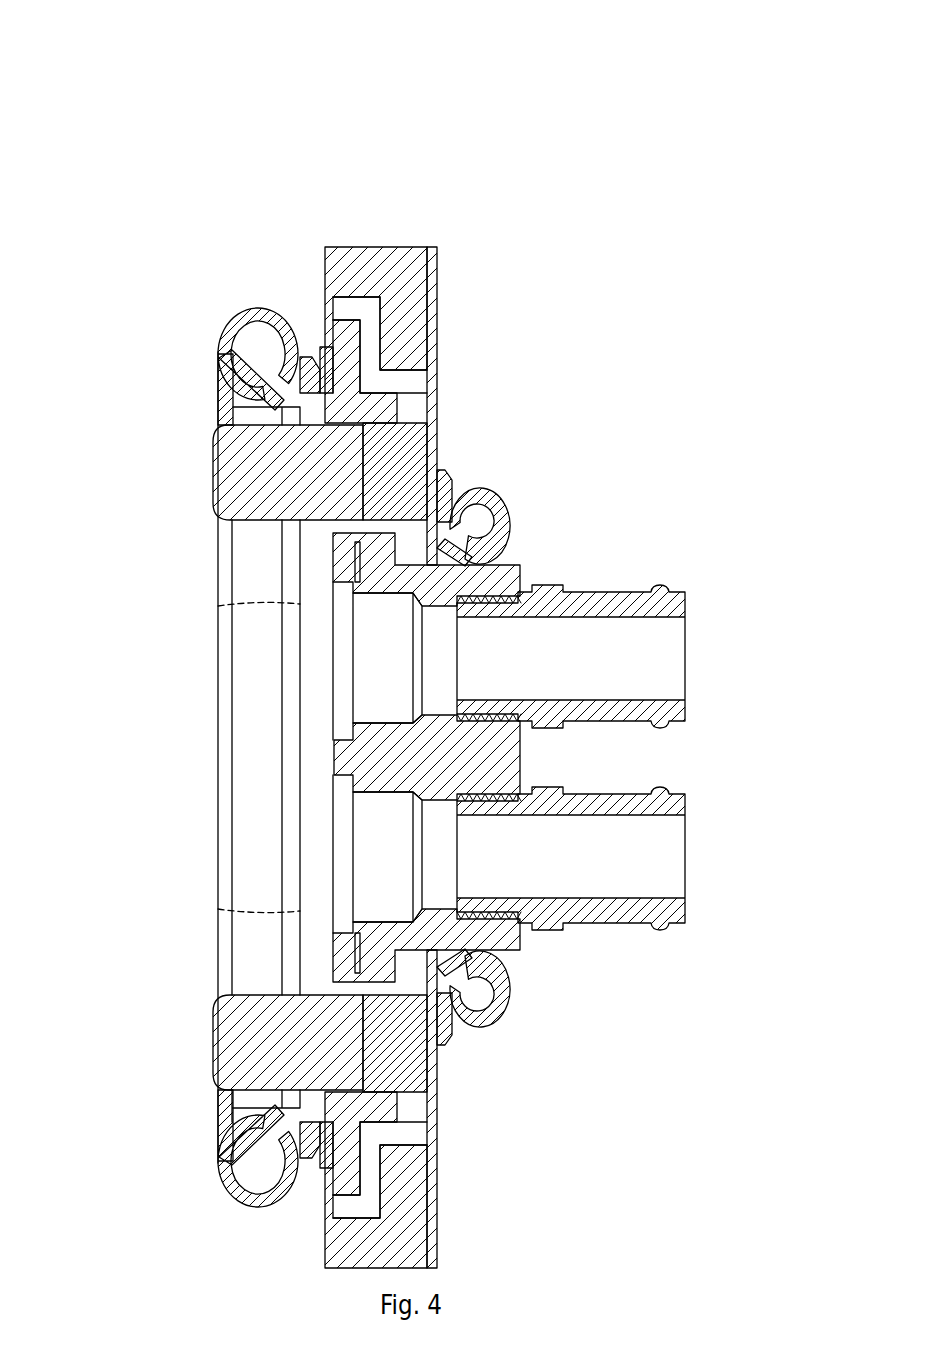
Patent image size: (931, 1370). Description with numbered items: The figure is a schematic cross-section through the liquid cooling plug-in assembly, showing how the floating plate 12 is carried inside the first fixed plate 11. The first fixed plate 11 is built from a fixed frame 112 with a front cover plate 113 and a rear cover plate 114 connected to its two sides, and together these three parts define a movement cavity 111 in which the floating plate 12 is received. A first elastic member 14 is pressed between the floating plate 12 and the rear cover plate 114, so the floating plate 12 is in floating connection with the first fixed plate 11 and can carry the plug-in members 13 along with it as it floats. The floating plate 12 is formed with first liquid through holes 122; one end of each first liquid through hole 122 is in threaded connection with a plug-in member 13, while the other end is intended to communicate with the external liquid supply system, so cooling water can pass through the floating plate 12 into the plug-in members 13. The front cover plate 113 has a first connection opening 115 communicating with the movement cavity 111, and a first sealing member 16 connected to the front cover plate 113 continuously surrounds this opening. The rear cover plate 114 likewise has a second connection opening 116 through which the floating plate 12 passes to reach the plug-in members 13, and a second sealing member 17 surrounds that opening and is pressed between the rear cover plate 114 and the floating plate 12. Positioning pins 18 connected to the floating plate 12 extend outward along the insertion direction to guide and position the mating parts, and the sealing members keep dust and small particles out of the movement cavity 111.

The first fixed plate 11 is at (399, 652).
The movement cavity 111 is at (367, 310).
The fixed frame 112 is at (407, 273).
The front cover plate 113 is at (322, 290).
The rear cover plate 114 is at (440, 280).
The first connection opening 115 is at (318, 380).
The second connection opening 116 is at (443, 540).
The floating plate 12 is at (335, 753).
The first liquid through hole 122 is at (388, 653).
The plug-in member 13 is at (605, 603).
The first elastic member 14 is at (400, 455).
The first sealing member 16 is at (219, 362).
The second sealing member 17 is at (512, 525).
The positioning pin 18 is at (215, 457).